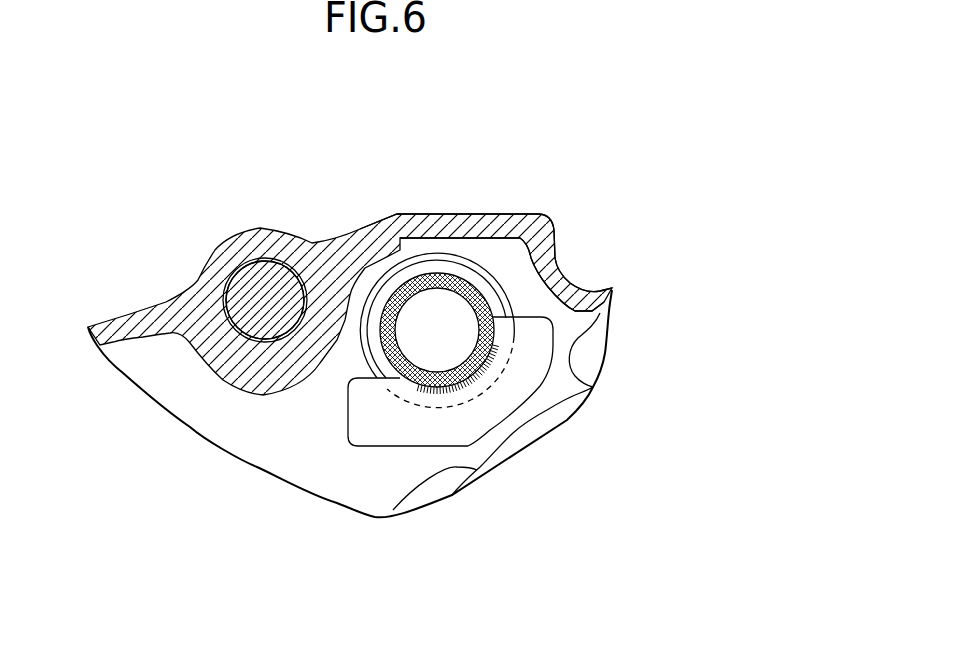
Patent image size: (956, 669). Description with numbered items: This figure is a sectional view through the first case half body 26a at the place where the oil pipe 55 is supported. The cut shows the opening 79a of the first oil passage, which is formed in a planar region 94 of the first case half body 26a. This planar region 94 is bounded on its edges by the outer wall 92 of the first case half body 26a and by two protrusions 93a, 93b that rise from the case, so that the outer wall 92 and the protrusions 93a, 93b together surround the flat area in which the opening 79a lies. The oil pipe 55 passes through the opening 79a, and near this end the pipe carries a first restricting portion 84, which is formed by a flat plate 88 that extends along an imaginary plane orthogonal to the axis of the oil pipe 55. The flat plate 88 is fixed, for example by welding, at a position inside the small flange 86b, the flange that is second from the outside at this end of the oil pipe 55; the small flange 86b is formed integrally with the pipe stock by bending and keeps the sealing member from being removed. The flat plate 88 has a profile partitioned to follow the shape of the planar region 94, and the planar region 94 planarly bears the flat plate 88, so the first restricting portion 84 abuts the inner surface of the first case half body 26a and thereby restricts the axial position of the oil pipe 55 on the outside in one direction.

The first case half body 26a is at (122, 323).
The oil pipe 55 is at (390, 300).
The opening 79a is at (437, 262).
The first restricting portion 84 is at (370, 452).
The small flange 86b is at (494, 278).
The flat plate 88 is at (537, 330).
The outer wall 92 is at (423, 217).
The protrusion 93a is at (392, 513).
The protrusion 93b is at (582, 328).
The planar region 94 is at (316, 447).